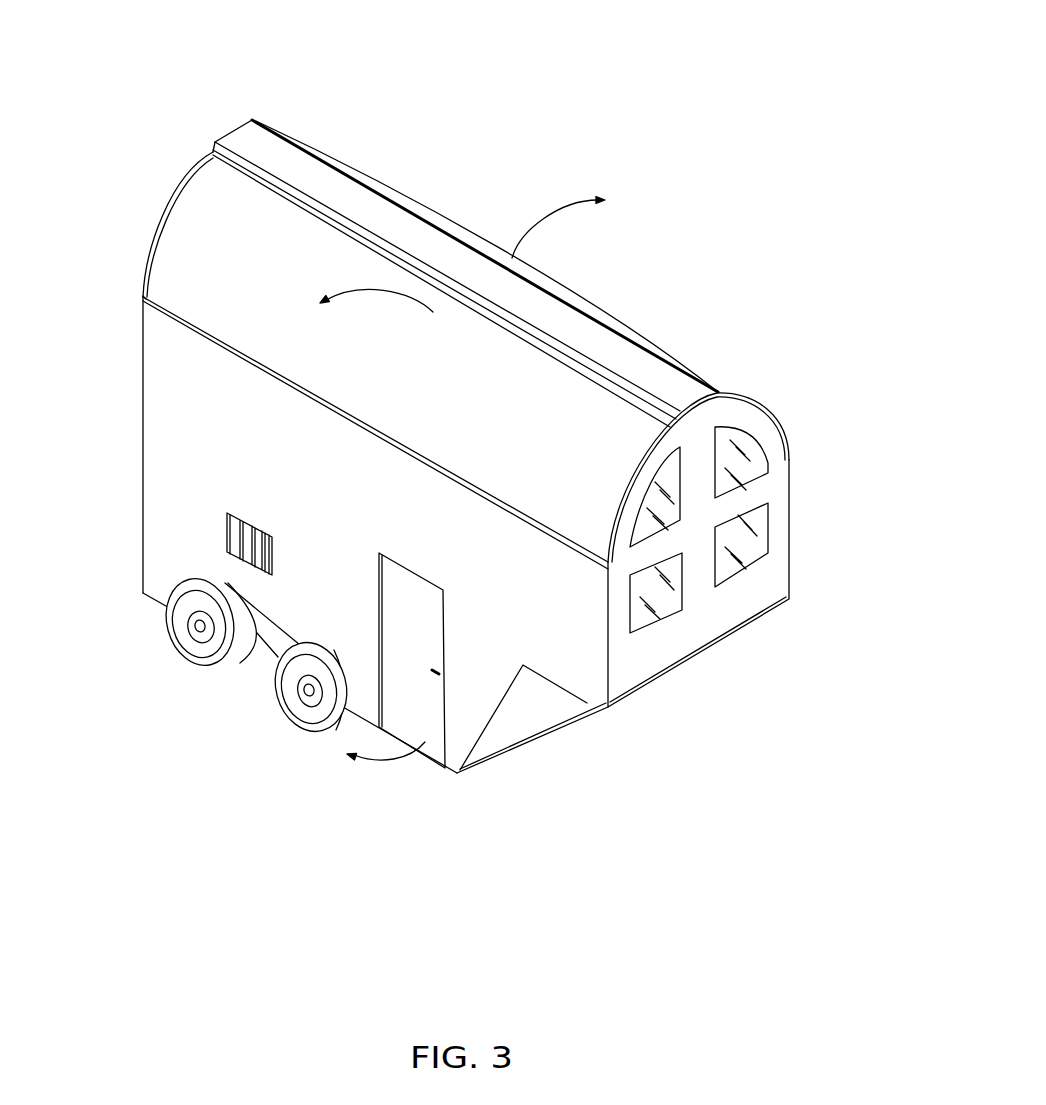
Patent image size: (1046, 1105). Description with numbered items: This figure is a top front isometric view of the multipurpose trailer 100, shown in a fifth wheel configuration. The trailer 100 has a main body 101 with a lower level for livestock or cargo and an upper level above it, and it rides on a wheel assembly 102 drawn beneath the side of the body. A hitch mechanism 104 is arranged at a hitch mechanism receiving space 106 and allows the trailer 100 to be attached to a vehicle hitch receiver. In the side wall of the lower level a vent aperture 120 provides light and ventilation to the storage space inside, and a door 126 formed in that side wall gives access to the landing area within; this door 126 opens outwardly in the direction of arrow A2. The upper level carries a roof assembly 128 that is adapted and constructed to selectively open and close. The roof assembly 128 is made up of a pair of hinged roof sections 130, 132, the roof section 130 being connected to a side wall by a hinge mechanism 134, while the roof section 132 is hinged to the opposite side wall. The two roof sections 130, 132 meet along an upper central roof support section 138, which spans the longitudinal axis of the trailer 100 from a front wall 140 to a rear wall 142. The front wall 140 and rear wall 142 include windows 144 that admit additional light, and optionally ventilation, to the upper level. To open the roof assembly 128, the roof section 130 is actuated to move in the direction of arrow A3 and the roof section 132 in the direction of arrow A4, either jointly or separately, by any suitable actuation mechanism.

The multipurpose trailer 100 is at (640, 55).
The main body 101 is at (140, 405).
The wheel assembly 102 is at (193, 655).
The hitch mechanism 104 is at (680, 667).
The hitch mechanism receiving space 106 is at (583, 727).
The vent aperture 120 is at (227, 546).
The door 126 is at (460, 747).
The roof assembly 128 is at (662, 327).
The roof section 130 is at (205, 185).
The roof section 132 is at (390, 192).
The hinge mechanism 134 is at (138, 298).
The upper central roof support section 138 is at (317, 172).
The front wall 140 is at (765, 415).
The rear wall 142 is at (165, 230).
The windows 144 is at (752, 463).
The arrow A2 is at (402, 760).
The arrow A3 is at (400, 297).
The arrow A4 is at (538, 222).